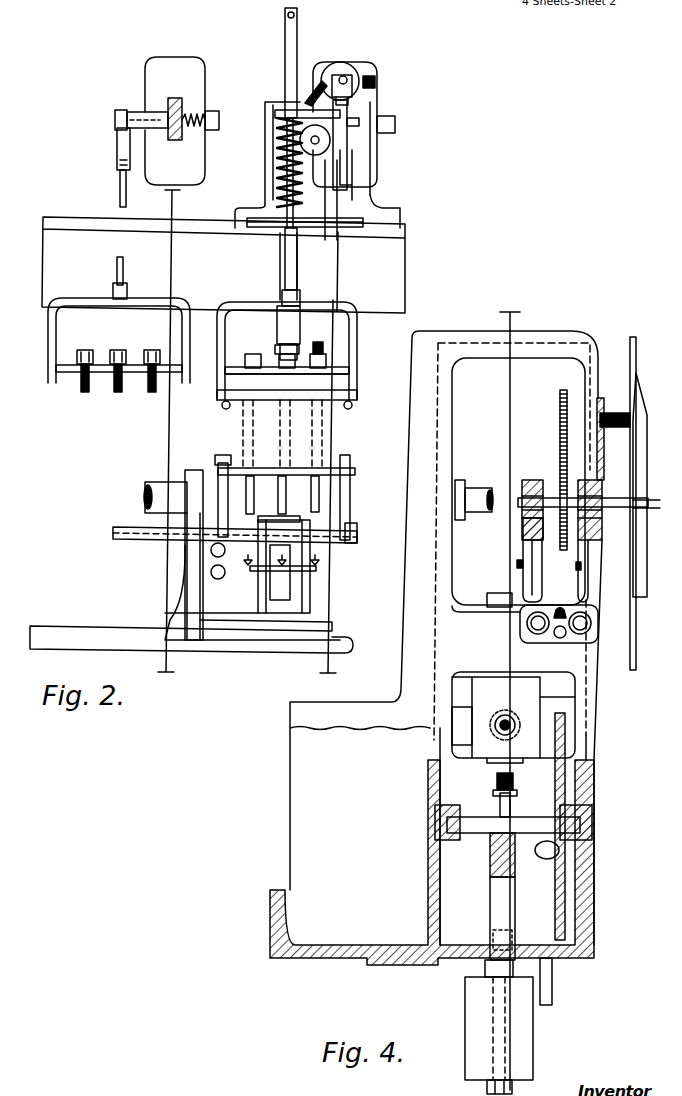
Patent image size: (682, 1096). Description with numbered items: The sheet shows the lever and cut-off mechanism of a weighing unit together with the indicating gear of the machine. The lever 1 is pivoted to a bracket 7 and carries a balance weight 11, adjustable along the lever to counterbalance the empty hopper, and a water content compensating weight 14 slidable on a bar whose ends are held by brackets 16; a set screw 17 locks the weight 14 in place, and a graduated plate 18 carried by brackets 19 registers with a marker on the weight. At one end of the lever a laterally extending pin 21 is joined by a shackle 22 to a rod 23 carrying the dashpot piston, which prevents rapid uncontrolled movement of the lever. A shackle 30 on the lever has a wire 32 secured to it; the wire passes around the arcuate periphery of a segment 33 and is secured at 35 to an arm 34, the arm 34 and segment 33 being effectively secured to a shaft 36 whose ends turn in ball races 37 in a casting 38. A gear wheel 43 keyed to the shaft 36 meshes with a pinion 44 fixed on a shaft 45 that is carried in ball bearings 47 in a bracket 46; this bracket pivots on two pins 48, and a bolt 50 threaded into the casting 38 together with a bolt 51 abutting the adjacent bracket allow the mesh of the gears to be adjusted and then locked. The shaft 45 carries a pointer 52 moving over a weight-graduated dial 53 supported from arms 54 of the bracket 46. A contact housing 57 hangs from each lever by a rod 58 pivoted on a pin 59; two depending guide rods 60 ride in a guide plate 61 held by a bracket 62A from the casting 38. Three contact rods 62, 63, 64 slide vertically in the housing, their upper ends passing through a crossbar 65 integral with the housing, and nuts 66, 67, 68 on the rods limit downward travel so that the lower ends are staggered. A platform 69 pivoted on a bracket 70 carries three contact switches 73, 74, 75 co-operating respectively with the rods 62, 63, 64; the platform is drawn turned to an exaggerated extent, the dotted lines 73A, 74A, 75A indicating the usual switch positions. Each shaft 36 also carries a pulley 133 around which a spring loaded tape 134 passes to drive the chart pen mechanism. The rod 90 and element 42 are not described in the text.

In FIG. 2, the lever 1 is at (183, 101).
In FIG. 2, the bracket 7 is at (378, 212).
In FIG. 2, the balance weight 11 is at (168, 64).
In FIG. 2, the water content compensating weight 14 is at (360, 70).
In FIG. 2, the brackets 16 is at (352, 88).
In FIG. 2, the set screw 17 is at (375, 82).
In FIG. 2, the graduated plate 18 is at (322, 80).
In FIG. 2, the brackets 19 is at (292, 110).
In FIG. 2, the pin 21 is at (148, 113).
In FIG. 2, the shackle 22 is at (117, 142).
In FIG. 2, the rod 23 is at (120, 189).
In FIG. 2, the shackle 30 is at (325, 232).
In FIG. 2, the wire 32 is at (340, 287).
In FIG. 4, the wire 32 is at (510, 651).
In FIG. 4, the segment 33 is at (515, 803).
In FIG. 4, the arm 34 is at (487, 600).
In FIG. 4, the securing point 35 is at (490, 880).
In FIG. 4, the shaft 36 is at (478, 497).
In FIG. 4, the ball races 37 is at (594, 812).
In FIG. 2, the casting 38 is at (348, 652).
In FIG. 4, the casting 38 is at (594, 768).
In FIG. 4, the motor block 42 is at (540, 695).
In FIG. 4, the gear wheel 43 is at (560, 402).
In FIG. 4, the pinion 44 is at (524, 525).
In FIG. 4, the shaft 45 is at (562, 470).
In FIG. 4, the bracket 46 is at (523, 550).
In FIG. 4, the ball bearings 47 is at (535, 480).
In FIG. 4, the pins 48 is at (576, 584).
In FIG. 4, the bolt 50 is at (552, 620).
In FIG. 4, the bolt 51 is at (562, 639).
In FIG. 4, the pointer 52 is at (642, 532).
In FIG. 4, the dial 53 is at (636, 634).
In FIG. 4, the arms 54 is at (605, 396).
In FIG. 2, the contact housing 57 is at (180, 305).
In FIG. 2, the rod 58 is at (115, 270).
In FIG. 2, the pin 59 is at (280, 128).
In FIG. 2, the guide rods 60 is at (220, 476).
In FIG. 2, the guide plate 61 is at (122, 527).
In FIG. 2, the contact rod 62 is at (152, 392).
In FIG. 2, the bracket 62A is at (238, 640).
In FIG. 2, the contact rod 63 is at (114, 392).
In FIG. 2, the contact rod 64 is at (78, 390).
In FIG. 2, the crossbar 65 is at (345, 370).
In FIG. 2, the nut 66 is at (150, 350).
In FIG. 2, the nut 67 is at (116, 350).
In FIG. 2, the nut 68 is at (80, 350).
In FIG. 2, the platform 69 is at (302, 571).
In FIG. 2, the bracket 70 is at (312, 598).
In FIG. 2, the contact switch 73 is at (322, 562).
In FIG. 2, the dotted line 73A is at (320, 510).
In FIG. 2, the contact switch 74 is at (283, 572).
In FIG. 2, the dotted line 74A is at (300, 520).
In FIG. 2, the contact switch 75 is at (211, 578).
In FIG. 2, the dotted line 75A is at (211, 548).
In FIG. 2, the rod 90 is at (297, 26).
In FIG. 4, the pulley 133 is at (560, 855).
In FIG. 4, the spring loaded tape 134 is at (556, 990).